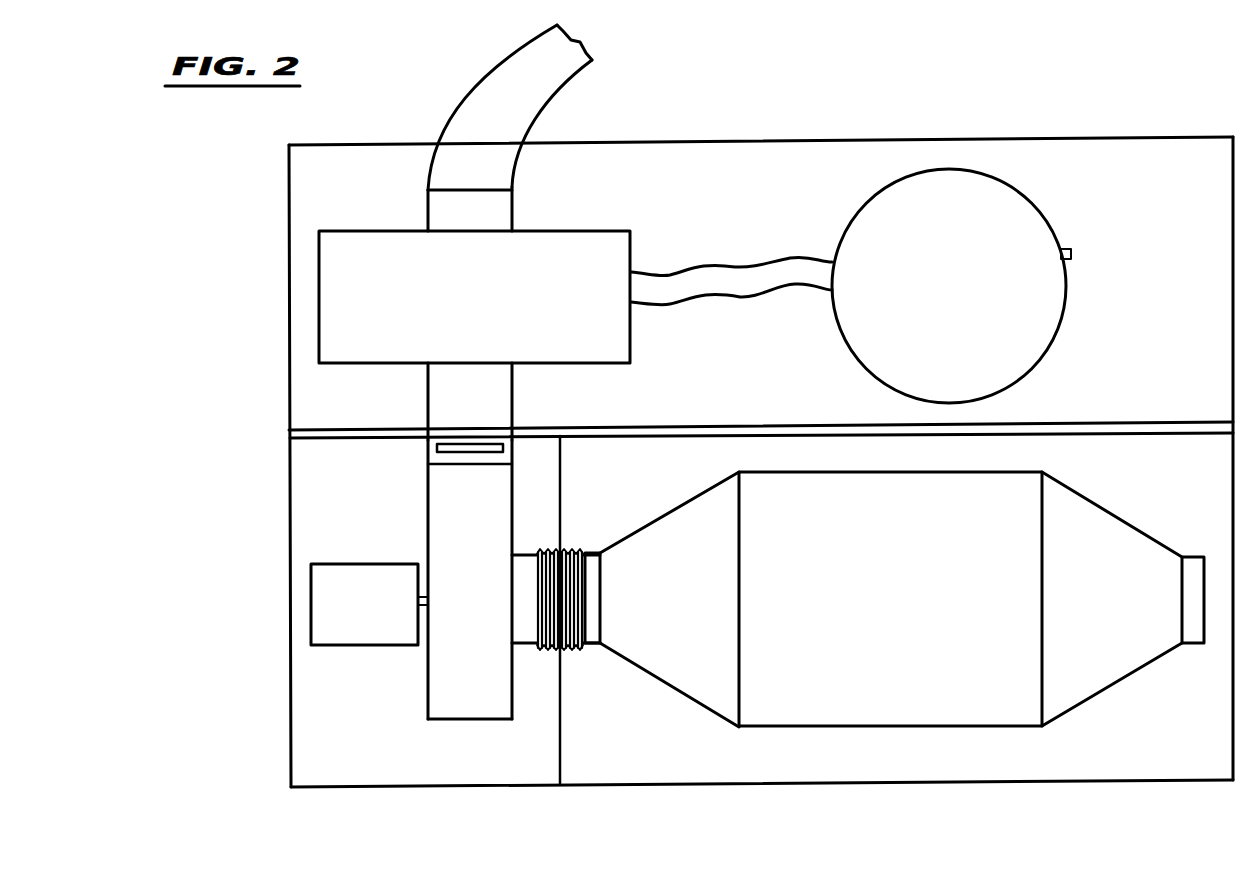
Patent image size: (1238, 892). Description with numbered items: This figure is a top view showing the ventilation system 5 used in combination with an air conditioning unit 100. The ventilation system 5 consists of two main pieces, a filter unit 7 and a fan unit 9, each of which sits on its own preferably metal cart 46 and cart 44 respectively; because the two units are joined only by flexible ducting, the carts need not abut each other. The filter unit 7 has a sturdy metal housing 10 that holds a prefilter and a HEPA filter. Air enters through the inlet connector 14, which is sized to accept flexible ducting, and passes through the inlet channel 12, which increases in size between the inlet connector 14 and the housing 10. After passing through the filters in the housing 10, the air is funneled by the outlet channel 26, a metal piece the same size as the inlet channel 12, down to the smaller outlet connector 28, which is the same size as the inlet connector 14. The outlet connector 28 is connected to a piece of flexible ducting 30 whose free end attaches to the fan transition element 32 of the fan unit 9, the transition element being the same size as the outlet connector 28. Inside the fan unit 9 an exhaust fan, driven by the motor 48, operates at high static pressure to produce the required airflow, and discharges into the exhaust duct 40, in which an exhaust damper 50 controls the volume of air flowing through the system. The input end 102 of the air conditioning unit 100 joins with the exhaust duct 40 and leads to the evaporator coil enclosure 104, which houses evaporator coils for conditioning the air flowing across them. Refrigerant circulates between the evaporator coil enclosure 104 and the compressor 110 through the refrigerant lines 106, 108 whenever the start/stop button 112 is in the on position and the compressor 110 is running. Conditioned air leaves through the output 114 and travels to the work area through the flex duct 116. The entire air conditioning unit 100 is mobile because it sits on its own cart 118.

The ventilation system 5 is at (245, 808).
The filter unit 7 is at (927, 794).
The fan unit 9 is at (480, 798).
The housing 10 is at (855, 728).
The inlet channel 12 is at (1075, 700).
The inlet connector 14 is at (1188, 565).
The outlet channel 26 is at (672, 690).
The outlet connector 28 is at (585, 646).
The flexible ducting 30 is at (570, 552).
The fan transition element 32 is at (522, 555).
The exhaust duct 40 is at (428, 490).
The cart 44 is at (352, 788).
The cart 46 is at (1150, 782).
The motor 48 is at (332, 645).
The exhaust damper 50 is at (437, 447).
The air conditioning unit 100 is at (255, 288).
The input end 102 is at (430, 400).
The evaporator coil enclosure 104 is at (591, 352).
The refrigerant line 106 is at (735, 298).
The refrigerant line 108 is at (735, 268).
The compressor 110 is at (1045, 325).
The start/stop button 112 is at (1071, 256).
The output 114 is at (430, 210).
The flex duct 116 is at (500, 90).
The cart 118 is at (940, 137).